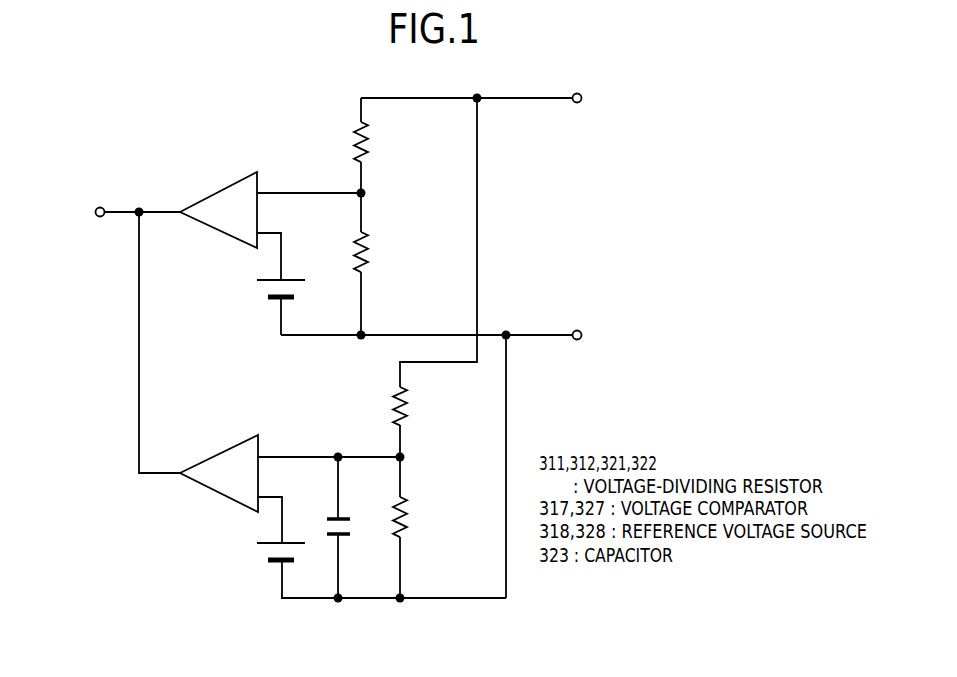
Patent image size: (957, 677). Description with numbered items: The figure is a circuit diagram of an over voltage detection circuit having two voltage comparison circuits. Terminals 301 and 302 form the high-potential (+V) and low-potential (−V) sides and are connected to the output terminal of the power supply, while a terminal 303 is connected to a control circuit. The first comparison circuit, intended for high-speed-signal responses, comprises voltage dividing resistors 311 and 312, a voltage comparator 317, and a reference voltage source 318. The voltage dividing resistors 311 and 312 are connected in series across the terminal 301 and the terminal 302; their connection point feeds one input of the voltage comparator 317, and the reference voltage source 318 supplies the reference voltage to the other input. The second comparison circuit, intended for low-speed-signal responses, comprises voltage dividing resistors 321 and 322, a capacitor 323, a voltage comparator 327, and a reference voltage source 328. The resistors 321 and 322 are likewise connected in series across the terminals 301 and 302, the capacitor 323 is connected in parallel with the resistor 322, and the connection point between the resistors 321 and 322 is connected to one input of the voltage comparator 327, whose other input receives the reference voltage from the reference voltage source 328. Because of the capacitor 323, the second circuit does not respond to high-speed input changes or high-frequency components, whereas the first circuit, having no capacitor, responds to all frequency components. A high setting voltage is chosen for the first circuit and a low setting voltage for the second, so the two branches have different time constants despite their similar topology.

The terminal 301 is at (582, 98).
The terminal 302 is at (582, 335).
The terminal 303 is at (99, 207).
The voltage dividing resistor 311 is at (368, 143).
The voltage dividing resistor 312 is at (368, 254).
The voltage dividing resistor 321 is at (407, 407).
The voltage dividing resistor 322 is at (407, 518).
The voltage comparator 317 is at (218, 192).
The voltage comparator 327 is at (218, 456).
The reference voltage source 318 is at (263, 289).
The reference voltage source 328 is at (265, 552).
The capacitor 323 is at (353, 528).